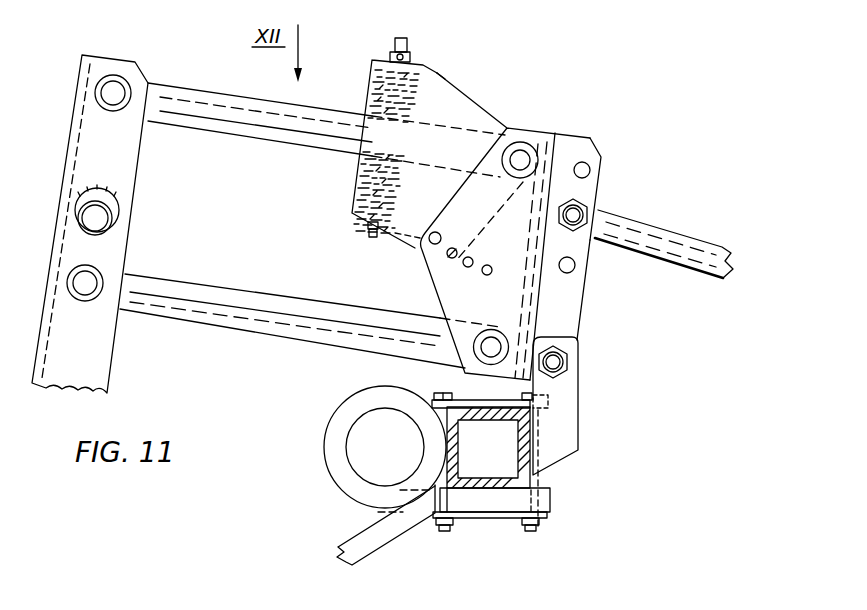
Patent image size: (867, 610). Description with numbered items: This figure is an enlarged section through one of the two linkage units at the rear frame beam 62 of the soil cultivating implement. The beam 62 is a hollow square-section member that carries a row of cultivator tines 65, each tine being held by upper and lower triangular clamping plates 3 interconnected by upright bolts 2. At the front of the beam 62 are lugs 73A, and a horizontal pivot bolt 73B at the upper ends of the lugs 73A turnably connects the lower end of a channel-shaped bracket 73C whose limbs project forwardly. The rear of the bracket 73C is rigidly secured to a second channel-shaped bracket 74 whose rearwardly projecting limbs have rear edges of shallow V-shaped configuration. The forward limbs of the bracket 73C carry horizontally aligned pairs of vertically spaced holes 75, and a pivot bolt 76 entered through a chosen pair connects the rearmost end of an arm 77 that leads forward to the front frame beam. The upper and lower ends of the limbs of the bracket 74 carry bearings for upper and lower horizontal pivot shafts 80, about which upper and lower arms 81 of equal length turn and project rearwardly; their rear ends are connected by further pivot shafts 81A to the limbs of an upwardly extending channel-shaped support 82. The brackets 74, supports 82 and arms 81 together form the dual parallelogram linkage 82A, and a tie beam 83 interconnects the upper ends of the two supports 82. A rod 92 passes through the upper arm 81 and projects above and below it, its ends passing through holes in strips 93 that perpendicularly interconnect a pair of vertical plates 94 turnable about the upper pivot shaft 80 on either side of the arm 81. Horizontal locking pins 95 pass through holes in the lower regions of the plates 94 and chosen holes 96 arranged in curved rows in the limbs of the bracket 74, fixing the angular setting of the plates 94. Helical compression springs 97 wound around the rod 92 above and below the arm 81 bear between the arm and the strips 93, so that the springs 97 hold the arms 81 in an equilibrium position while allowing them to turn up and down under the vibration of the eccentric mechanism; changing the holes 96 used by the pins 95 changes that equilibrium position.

The upright bolts 2 is at (440, 393).
The clamping plates 3 is at (478, 400).
The rear frame beam 62 is at (523, 460).
The cultivator tines 65 is at (319, 484).
The lugs 73A is at (579, 430).
The pivot bolt 73B is at (571, 362).
The bracket 73C is at (579, 313).
The second bracket 74 is at (540, 137).
The holes 75 is at (590, 170).
The pivot bolt 76 is at (574, 229).
The arm 77 is at (690, 268).
The pivot shafts 80 is at (521, 157).
The arms 81 is at (230, 137).
The pivot shafts 81A is at (110, 102).
The supports 82 is at (135, 162).
The dual parallelogram linkage 82A is at (230, 229).
The tie beam 83 is at (118, 221).
The rod 92 is at (410, 53).
The strips 93 is at (438, 72).
The vertical plates 94 is at (466, 106).
The locking pins 95 is at (386, 244).
The holes 96 is at (489, 265).
The helical compression springs 97 is at (375, 87).